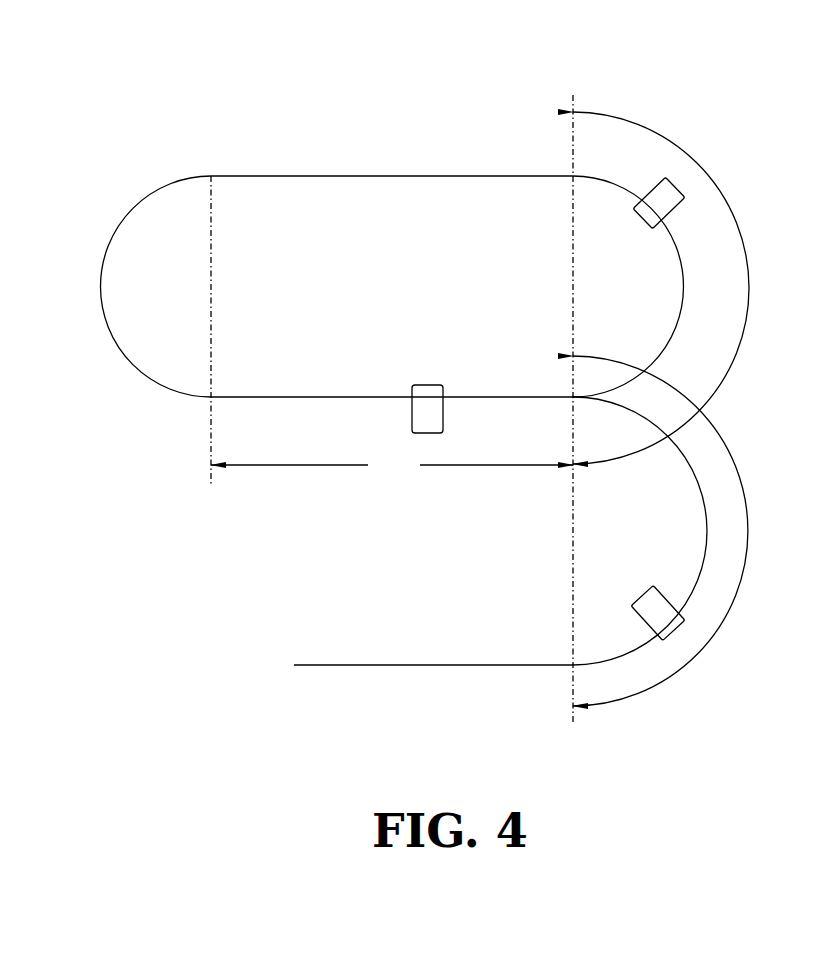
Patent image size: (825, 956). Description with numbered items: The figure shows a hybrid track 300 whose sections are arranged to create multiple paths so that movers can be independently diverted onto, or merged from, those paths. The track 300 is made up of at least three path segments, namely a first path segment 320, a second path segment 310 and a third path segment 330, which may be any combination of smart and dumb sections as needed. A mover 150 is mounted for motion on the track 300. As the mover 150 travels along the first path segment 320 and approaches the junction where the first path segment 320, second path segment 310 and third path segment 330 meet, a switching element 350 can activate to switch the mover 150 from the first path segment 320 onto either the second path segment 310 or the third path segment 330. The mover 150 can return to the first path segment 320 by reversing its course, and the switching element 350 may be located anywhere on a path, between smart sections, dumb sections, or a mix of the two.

The track 300 is at (370, 107).
The mover 150 is at (417, 385).
The switching element 350 is at (571, 395).
The second path segment 310 is at (669, 288).
The first path segment 320 is at (392, 464).
The third path segment 330 is at (669, 531).